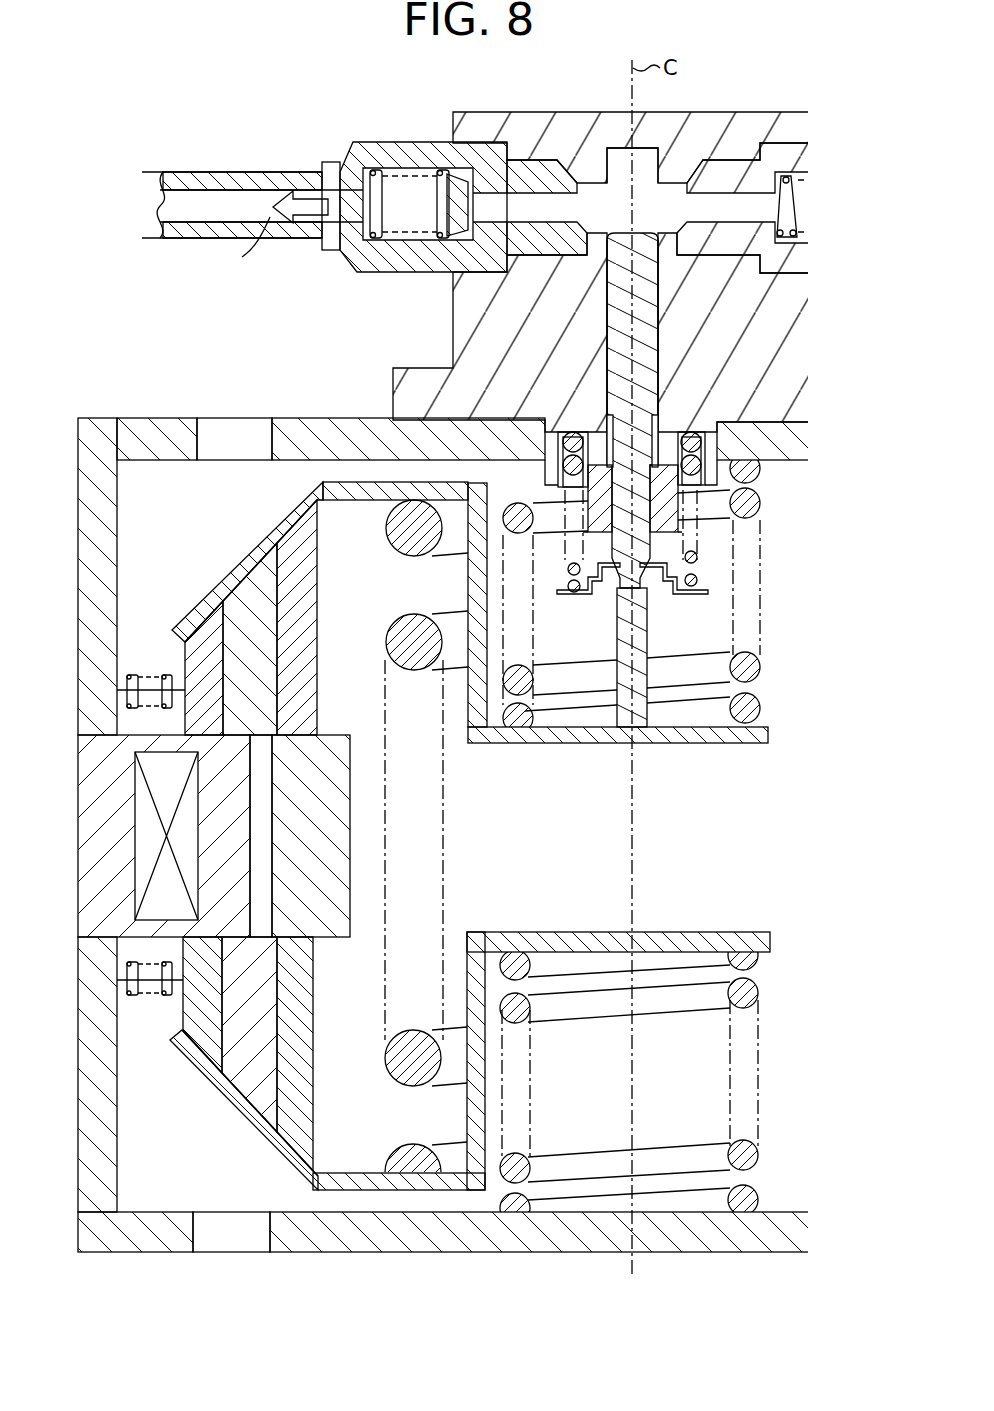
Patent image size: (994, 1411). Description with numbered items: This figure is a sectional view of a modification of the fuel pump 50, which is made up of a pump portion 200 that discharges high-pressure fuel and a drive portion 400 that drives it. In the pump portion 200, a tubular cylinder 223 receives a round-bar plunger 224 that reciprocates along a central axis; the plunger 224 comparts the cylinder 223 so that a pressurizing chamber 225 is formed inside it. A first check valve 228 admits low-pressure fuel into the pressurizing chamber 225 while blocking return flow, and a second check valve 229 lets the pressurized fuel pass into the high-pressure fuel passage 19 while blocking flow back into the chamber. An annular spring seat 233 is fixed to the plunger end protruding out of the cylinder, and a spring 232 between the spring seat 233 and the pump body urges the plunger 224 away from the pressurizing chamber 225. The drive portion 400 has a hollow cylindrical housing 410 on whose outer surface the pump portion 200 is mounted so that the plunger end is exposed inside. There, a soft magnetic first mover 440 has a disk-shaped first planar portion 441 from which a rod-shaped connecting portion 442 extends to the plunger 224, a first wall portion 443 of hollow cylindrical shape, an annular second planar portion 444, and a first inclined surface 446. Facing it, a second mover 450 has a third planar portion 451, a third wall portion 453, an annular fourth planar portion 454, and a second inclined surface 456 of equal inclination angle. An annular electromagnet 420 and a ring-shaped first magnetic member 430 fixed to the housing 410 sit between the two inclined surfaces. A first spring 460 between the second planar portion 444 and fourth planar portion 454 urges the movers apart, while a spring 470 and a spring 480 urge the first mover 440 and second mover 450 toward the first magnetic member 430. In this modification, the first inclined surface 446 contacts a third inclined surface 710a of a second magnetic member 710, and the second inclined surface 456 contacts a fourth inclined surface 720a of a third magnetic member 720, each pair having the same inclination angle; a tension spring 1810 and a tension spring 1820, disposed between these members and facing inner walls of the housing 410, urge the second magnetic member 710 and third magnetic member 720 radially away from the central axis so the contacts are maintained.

The fuel pump 50 is at (97, 154).
The high-pressure fuel passage 19 is at (250, 172).
The pump portion 200 is at (627, 272).
The cylinder 223 is at (610, 368).
The plunger 224 is at (658, 340).
The pressurizing chamber 225 is at (652, 203).
The first check valve 228 is at (798, 152).
The second check valve 229 is at (393, 267).
The spring 232 is at (703, 582).
The spring seat 233 is at (577, 595).
The drive portion 400 is at (425, 812).
The housing 410 is at (312, 418).
The electromagnet 420 is at (78, 828).
The first magnetic member 430 is at (338, 870).
The first mover 440 is at (610, 613).
The first planar portion 441 is at (548, 745).
The connecting portion 442 is at (650, 640).
The first wall portion 443 is at (468, 575).
The second planar portion 444 is at (395, 519).
The first inclined surface 446 is at (273, 537).
The second mover 450 is at (562, 1056).
The third planar portion 451 is at (657, 932).
The third wall portion 453 is at (467, 1113).
The fourth planar portion 454 is at (353, 1173).
The second inclined surface 456 is at (273, 1138).
The first spring 460 is at (388, 633).
The spring 470 is at (760, 503).
The spring 480 is at (745, 1162).
The second magnetic member 710 is at (317, 585).
The third inclined surface 710a is at (260, 563).
The third magnetic member 720 is at (317, 1095).
The fourth inclined surface 720a is at (247, 1098).
The tension spring 1810 is at (130, 677).
The tension spring 1820 is at (130, 998).